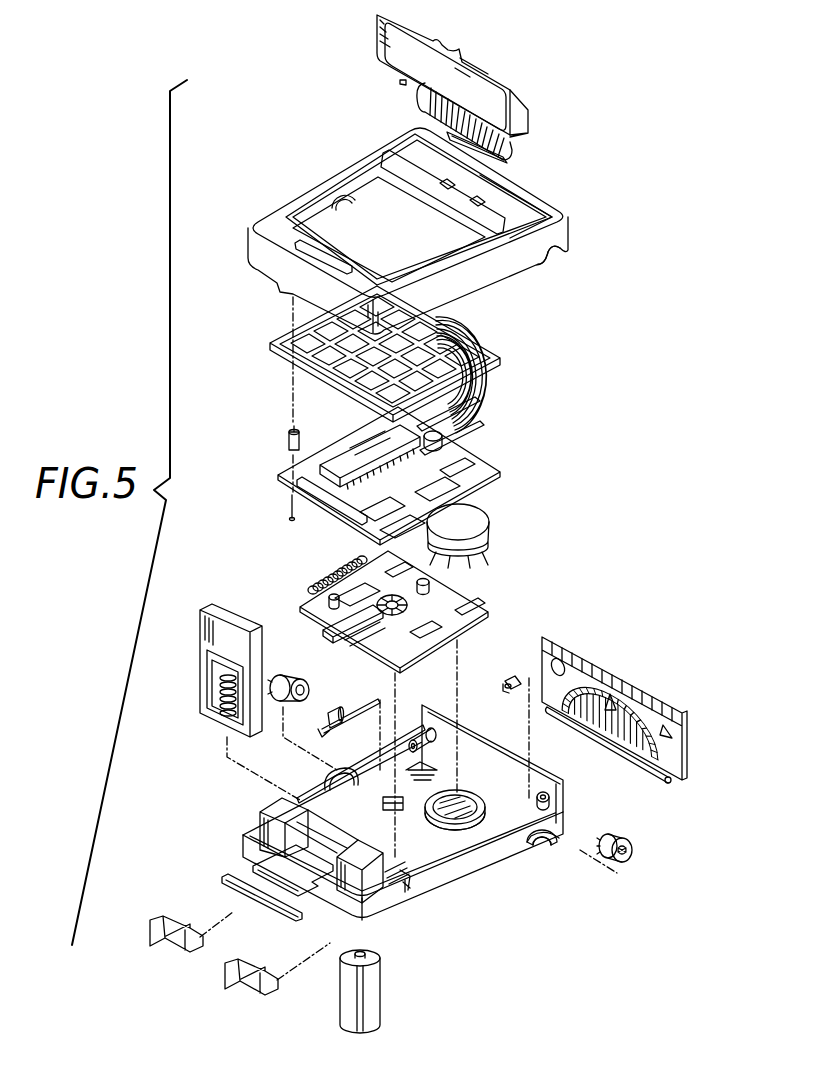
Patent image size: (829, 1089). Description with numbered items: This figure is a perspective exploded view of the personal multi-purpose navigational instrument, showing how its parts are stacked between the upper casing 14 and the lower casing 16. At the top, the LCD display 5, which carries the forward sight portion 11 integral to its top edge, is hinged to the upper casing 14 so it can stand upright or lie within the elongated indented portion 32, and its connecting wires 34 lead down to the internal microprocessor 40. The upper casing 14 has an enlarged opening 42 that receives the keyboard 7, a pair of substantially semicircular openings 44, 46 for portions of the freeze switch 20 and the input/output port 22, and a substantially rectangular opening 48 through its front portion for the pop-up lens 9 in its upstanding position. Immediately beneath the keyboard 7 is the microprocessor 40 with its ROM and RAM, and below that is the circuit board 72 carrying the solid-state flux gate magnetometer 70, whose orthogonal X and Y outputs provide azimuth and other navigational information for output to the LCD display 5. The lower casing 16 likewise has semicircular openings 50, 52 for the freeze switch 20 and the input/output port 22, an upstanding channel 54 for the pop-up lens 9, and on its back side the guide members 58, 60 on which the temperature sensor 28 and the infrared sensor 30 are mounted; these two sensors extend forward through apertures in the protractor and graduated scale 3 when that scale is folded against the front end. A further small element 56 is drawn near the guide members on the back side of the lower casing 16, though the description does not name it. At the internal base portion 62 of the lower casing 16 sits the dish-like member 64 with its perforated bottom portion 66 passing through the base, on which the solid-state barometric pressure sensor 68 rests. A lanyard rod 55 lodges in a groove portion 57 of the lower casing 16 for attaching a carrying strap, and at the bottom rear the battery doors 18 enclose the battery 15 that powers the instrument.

The protractor and graduated scale 3 is at (643, 707).
The LCD display 5 is at (378, 58).
The keyboard 7 is at (425, 348).
The pop-up lens 9 is at (212, 640).
The forward sight portion 11 is at (463, 62).
The upper casing 14 is at (258, 224).
The battery 15 is at (373, 1000).
The lower casing 16 is at (463, 897).
The battery doors 18 is at (160, 937).
The freeze switch 20 is at (293, 673).
The input/output port 22 is at (637, 846).
The temperature sensor 28 is at (347, 700).
The infrared sensor 30 is at (517, 677).
The elongated indented portion 32 is at (537, 208).
The connecting wires 34 is at (513, 158).
The microprocessor 40 is at (330, 458).
The enlarged opening 42 is at (370, 197).
The semicircular shaped opening 44 is at (337, 207).
The semicircular shaped opening 46 is at (545, 253).
The rectangular opening 48 is at (250, 262).
The semicircular shaped opening 50 is at (330, 780).
The semicircular shaped opening 52 is at (562, 830).
The upstanding channel 54 is at (273, 830).
The lanyard rod 55 is at (243, 893).
The grommet 56 is at (552, 795).
The groove portion 57 is at (283, 868).
The guide member 58 is at (425, 728).
The guide member 60 is at (560, 804).
The internal base portion 62 is at (410, 873).
The dish-like member 64 is at (480, 822).
The perforated bottom portion 66 is at (467, 803).
The barometric pressure sensor 68 is at (487, 548).
The flux gate magnetometer 70 is at (312, 592).
The circuit board 72 is at (467, 595).